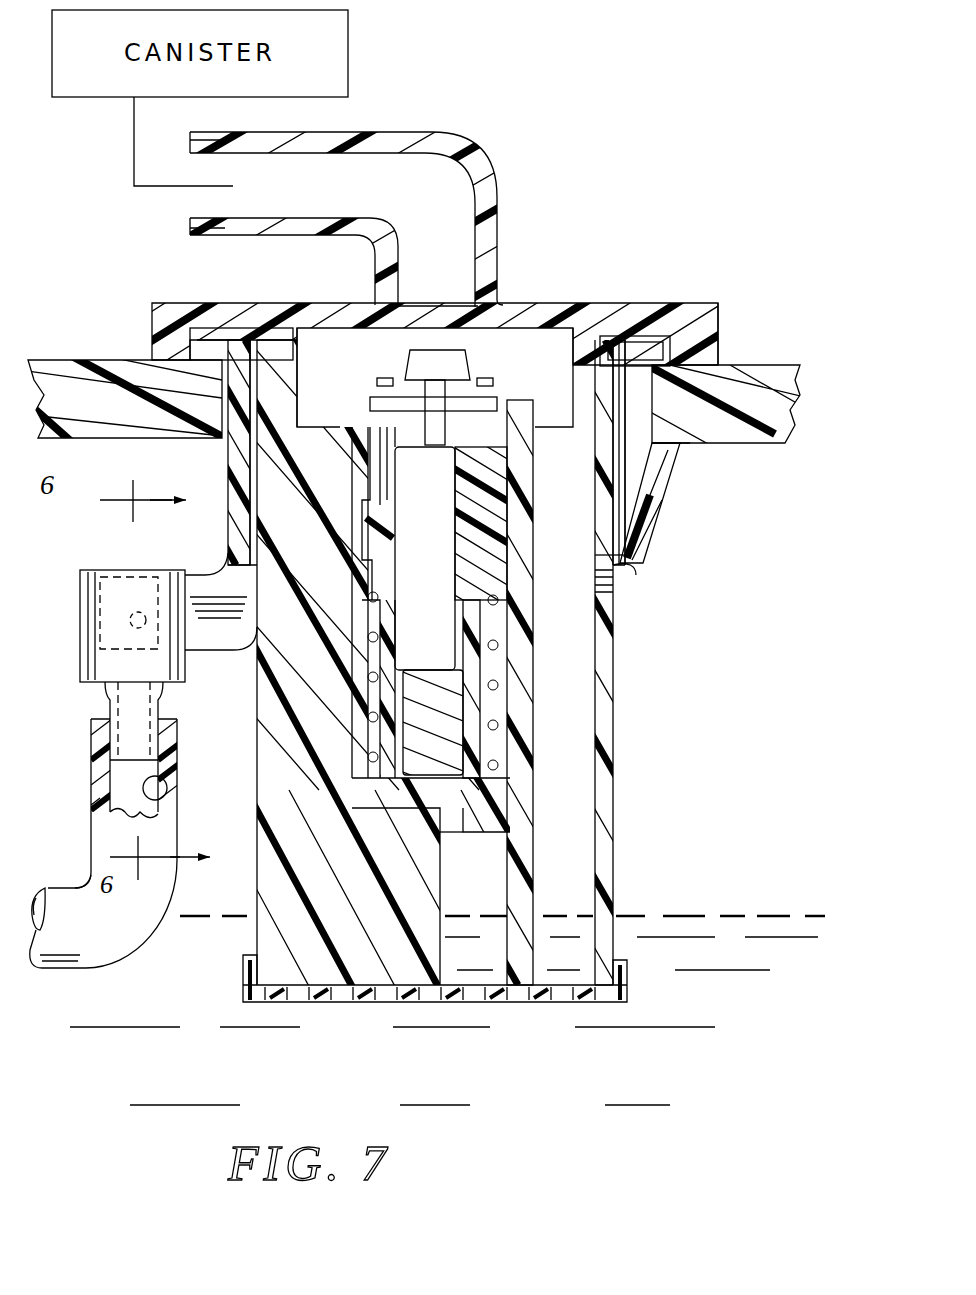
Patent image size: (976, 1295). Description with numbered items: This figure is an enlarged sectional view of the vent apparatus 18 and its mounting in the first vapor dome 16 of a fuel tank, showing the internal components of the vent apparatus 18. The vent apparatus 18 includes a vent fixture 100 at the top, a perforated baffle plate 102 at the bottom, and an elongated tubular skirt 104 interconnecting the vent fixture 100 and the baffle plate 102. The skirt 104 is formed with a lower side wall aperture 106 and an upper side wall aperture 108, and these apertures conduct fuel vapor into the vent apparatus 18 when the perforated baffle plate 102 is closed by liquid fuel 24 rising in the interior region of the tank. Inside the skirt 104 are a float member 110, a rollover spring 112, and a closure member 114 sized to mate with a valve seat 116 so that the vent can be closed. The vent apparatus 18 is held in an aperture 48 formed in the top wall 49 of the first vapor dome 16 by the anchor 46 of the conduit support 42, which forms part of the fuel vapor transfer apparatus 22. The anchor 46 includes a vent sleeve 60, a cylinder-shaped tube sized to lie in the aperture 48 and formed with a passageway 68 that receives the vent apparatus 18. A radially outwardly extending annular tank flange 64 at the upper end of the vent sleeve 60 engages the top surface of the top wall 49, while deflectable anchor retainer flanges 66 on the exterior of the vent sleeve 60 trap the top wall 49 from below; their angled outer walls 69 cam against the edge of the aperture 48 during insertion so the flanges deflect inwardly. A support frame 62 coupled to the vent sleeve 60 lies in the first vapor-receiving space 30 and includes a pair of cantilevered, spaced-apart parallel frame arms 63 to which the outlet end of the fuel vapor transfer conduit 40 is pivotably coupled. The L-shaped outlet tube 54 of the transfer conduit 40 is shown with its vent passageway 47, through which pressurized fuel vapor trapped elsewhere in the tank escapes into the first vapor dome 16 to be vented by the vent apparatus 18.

The first vapor dome 16 is at (786, 360).
The vent apparatus 18 is at (510, 172).
The fuel vapor transfer apparatus 22 is at (32, 880).
The interior region 24 is at (719, 1004).
The first vapor-receiving space 30 is at (812, 532).
The fuel vapor transfer conduit 40 is at (96, 982).
The conduit support 42 is at (703, 496).
The anchor 46 is at (655, 556).
The vent passageway 47 is at (165, 803).
The aperture 48 is at (655, 405).
The top wall 49 is at (714, 364).
The L-shaped outlet tube 54 is at (66, 905).
The vent sleeve 60 is at (636, 568).
The support frame 62 is at (222, 665).
The frame arms 63 is at (212, 573).
The annular tank flange 64 is at (232, 338).
The anchor retainer flanges 66 is at (670, 485).
The passageway 68 is at (240, 492).
The angled outer walls 69 is at (683, 447).
The vent fixture 100 is at (524, 296).
The perforated baffle plate 102 is at (598, 1012).
The elongated tubular skirt 104 is at (616, 846).
The lower side wall aperture 106 is at (602, 925).
The upper side wall aperture 108 is at (616, 592).
The float member 110 is at (500, 755).
The rollover spring 112 is at (540, 713).
The closure member 114 is at (410, 367).
The valve seat 116 is at (481, 325).